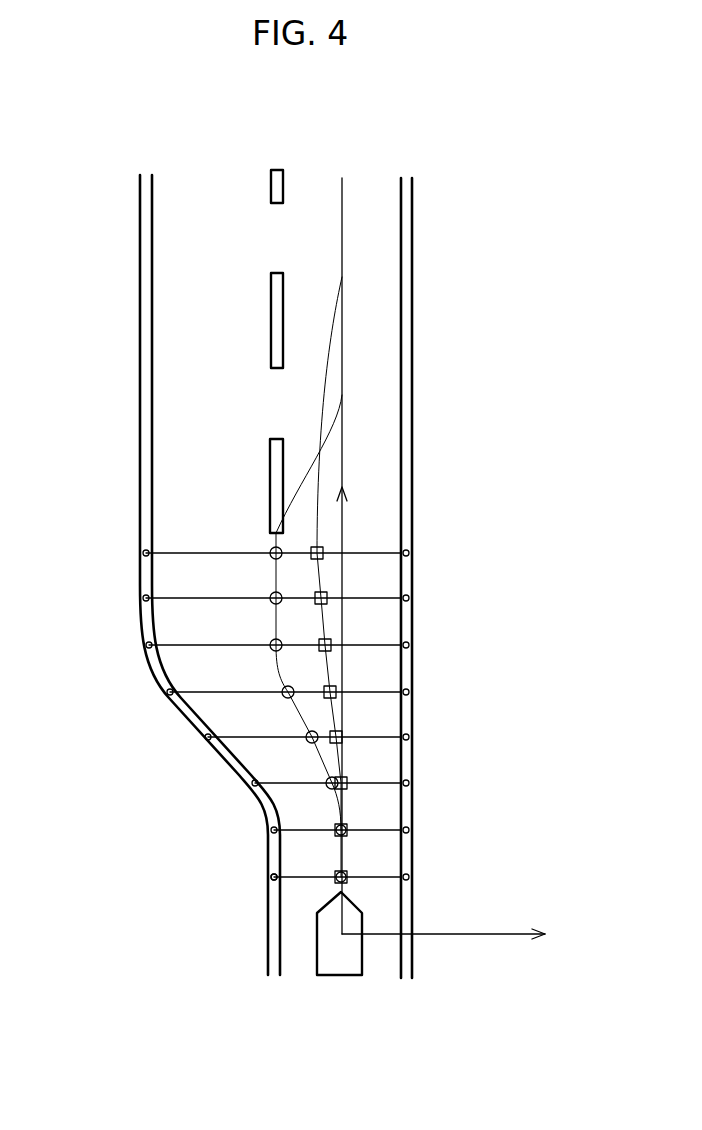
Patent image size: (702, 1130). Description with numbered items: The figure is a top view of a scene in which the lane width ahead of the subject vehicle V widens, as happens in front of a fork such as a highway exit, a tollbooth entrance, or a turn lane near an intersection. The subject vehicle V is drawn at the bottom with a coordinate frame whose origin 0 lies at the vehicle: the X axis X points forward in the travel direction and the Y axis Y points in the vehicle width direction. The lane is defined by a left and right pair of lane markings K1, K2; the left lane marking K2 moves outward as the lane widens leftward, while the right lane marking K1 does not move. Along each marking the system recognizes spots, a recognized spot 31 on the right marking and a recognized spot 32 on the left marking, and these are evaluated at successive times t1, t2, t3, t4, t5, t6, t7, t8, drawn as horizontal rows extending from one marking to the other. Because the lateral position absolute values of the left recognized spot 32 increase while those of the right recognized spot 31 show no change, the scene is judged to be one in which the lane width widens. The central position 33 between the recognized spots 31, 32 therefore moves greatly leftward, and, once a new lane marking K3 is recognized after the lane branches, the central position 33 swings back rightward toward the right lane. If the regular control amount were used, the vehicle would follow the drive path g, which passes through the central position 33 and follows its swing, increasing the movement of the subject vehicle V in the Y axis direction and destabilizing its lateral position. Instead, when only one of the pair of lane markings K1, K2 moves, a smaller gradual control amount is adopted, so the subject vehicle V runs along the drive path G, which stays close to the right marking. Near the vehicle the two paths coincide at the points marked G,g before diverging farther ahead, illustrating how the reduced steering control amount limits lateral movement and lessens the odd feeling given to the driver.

The right lane marking K1 is at (412, 213).
The left lane marking K2 is at (142, 203).
The new lane marking K3 is at (272, 468).
The drive path G is at (315, 528).
The drive path g is at (275, 622).
The central position 33 is at (286, 697).
The recognized spot 32 is at (268, 878).
The recognized spot 31 is at (410, 870).
The subject vehicle V is at (355, 972).
The X axis X is at (348, 556).
The Y axis Y is at (454, 935).
The origin 0 is at (335, 951).
The drive paths G,g is at (336, 883).
The time step 1 t1 is at (359, 878).
The time step 2 t2 is at (359, 831).
The time step 3 t3 is at (349, 784).
The time step 4 t4 is at (326, 738).
The time step 5 t5 is at (307, 693).
The time step 6 t6 is at (296, 646).
The time step 7 t7 is at (295, 599).
The time step 8 t8 is at (295, 554).